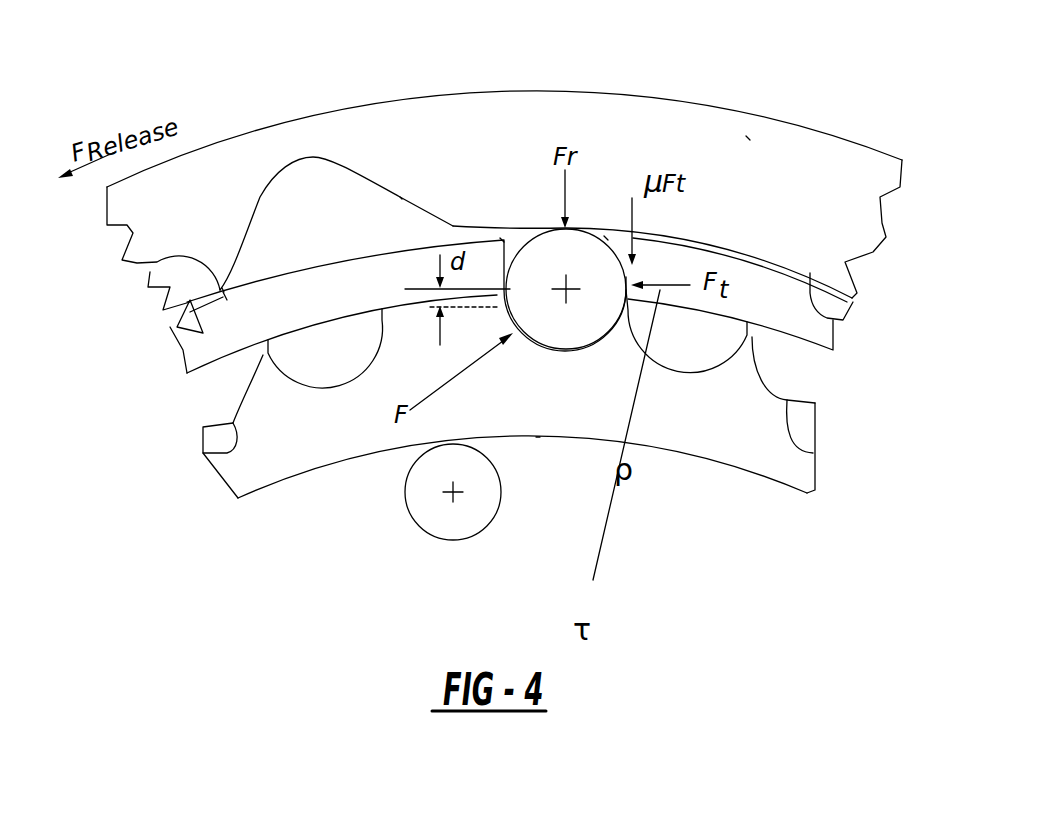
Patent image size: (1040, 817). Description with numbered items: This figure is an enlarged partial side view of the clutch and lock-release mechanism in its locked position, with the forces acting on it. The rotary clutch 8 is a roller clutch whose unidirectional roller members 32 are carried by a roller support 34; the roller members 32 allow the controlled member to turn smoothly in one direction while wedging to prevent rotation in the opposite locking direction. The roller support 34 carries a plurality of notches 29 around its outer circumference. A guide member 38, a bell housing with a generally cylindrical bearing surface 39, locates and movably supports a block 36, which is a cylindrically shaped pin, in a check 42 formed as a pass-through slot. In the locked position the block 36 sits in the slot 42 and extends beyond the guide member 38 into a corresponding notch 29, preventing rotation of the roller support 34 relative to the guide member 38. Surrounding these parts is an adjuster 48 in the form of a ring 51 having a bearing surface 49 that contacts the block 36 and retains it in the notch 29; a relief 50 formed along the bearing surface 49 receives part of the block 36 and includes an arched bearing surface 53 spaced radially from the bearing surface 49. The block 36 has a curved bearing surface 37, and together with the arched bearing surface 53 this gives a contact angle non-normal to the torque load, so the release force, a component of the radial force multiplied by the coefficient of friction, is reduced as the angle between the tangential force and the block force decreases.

The rotary clutch 8 is at (538, 438).
The notches 29 is at (227, 457).
The roller members 32 is at (452, 518).
The roller support 34 is at (735, 432).
The block 36 is at (580, 318).
The curved bearing surface 37 is at (608, 240).
The guide member 38 is at (222, 328).
The bearing surface 39 is at (153, 268).
The check 42 is at (504, 242).
The adjuster 48 is at (430, 180).
The bearing surface 49 is at (853, 318).
The relief 50 is at (315, 203).
The ring 51 is at (748, 138).
The arched bearing surface 53 is at (260, 197).